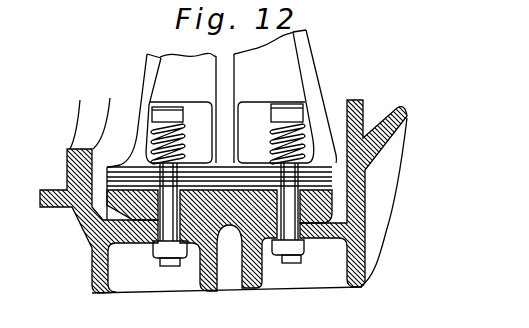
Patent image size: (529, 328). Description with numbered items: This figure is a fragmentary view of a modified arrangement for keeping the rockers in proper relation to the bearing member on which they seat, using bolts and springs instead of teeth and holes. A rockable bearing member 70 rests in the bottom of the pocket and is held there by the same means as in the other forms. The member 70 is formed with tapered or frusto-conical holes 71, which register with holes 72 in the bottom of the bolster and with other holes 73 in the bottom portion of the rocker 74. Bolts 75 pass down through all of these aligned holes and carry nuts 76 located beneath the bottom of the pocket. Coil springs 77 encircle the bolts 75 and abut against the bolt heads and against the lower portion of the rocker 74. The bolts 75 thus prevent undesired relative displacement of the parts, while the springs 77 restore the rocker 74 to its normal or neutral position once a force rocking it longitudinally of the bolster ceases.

The rockable bearing member 70 is at (103, 207).
The tapered or frusto-conical holes 71 is at (330, 200).
The holes in the bottom of the bolster 72 is at (345, 223).
The holes in the bottom portion of the rocker 73 is at (188, 163).
The rocker 74 is at (308, 97).
The bolts 75 is at (174, 108).
The nuts 76 is at (186, 252).
The coil springs 77 is at (178, 138).